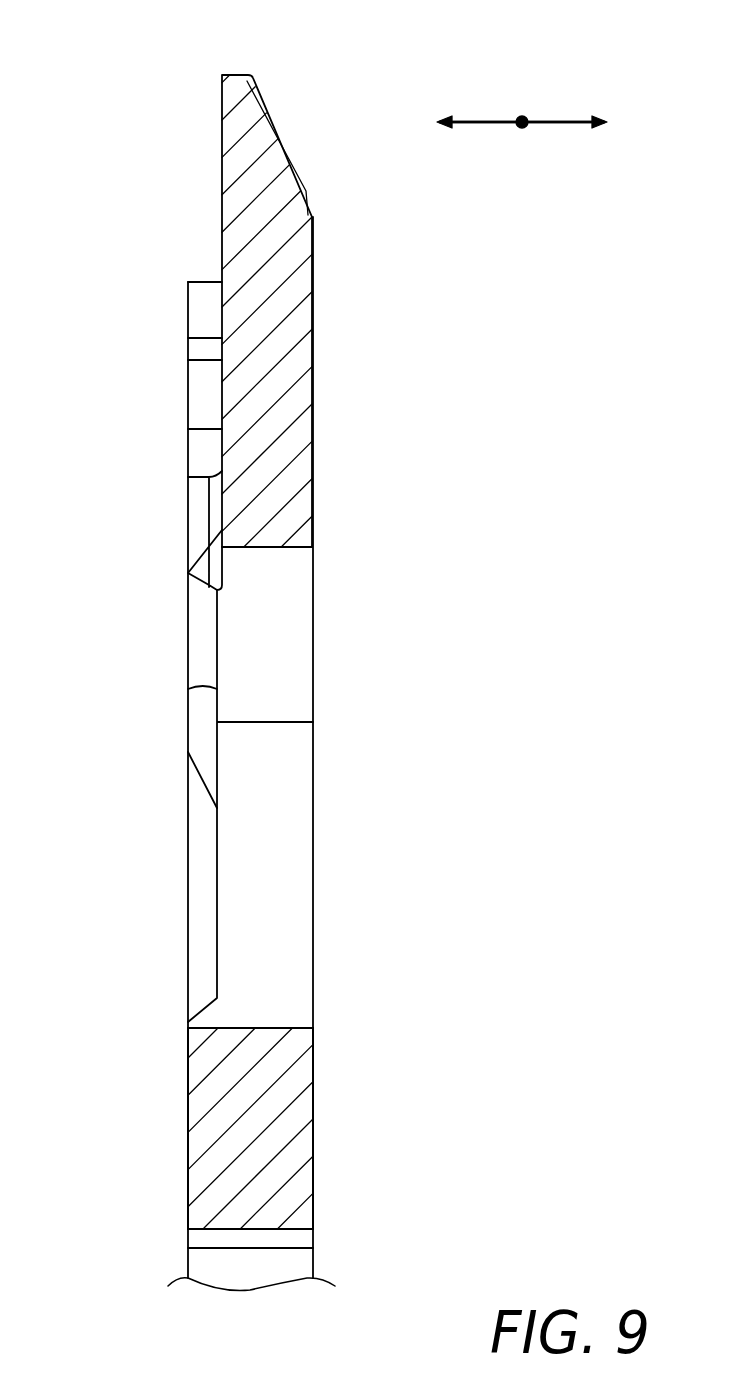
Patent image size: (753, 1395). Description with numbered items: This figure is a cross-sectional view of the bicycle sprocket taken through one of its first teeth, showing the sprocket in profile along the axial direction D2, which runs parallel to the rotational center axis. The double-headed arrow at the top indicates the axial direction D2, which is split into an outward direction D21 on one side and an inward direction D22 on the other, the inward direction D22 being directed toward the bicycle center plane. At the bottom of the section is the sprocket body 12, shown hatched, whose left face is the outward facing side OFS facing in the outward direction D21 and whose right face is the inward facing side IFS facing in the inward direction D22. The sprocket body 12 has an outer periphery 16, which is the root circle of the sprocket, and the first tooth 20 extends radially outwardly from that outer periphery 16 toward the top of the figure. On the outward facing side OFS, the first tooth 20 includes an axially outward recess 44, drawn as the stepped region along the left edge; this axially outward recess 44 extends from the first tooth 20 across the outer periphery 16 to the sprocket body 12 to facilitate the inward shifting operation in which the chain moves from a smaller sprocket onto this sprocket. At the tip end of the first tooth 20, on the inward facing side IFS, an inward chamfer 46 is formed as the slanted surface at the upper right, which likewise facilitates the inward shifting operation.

The sprocket body 12 is at (316, 1136).
The outer periphery 16 is at (316, 529).
The first tooth 20 is at (316, 245).
The axially outward recess 44 is at (219, 508).
The inward chamfer 46 is at (273, 127).
The outward facing side OFS is at (185, 1060).
The inward facing side IFS is at (316, 1060).
The axial direction D2 is at (595, 37).
The outward direction D21 is at (467, 118).
The inward direction D22 is at (548, 118).